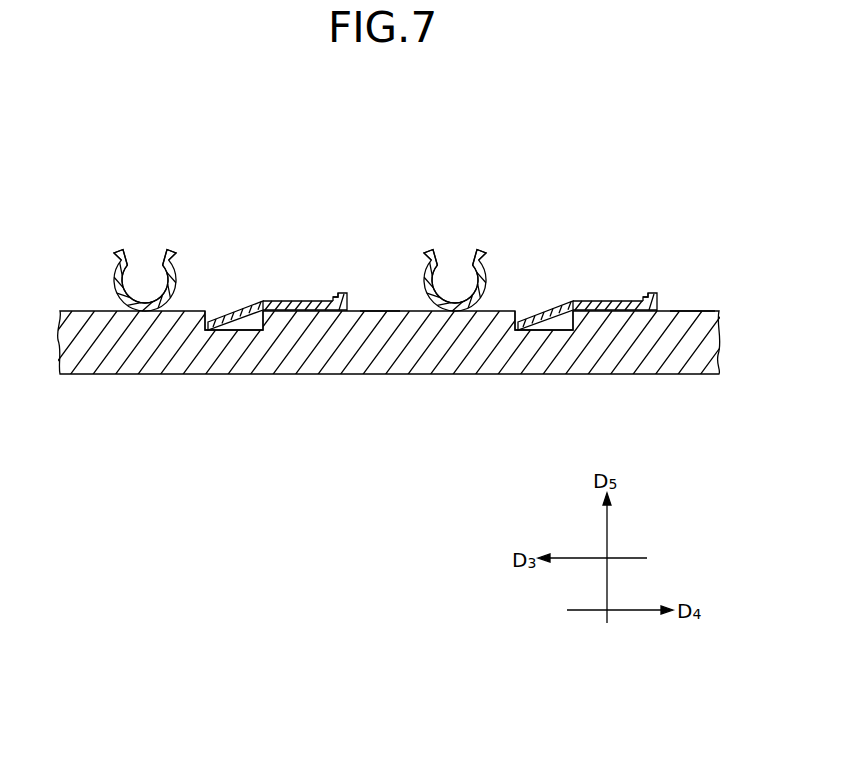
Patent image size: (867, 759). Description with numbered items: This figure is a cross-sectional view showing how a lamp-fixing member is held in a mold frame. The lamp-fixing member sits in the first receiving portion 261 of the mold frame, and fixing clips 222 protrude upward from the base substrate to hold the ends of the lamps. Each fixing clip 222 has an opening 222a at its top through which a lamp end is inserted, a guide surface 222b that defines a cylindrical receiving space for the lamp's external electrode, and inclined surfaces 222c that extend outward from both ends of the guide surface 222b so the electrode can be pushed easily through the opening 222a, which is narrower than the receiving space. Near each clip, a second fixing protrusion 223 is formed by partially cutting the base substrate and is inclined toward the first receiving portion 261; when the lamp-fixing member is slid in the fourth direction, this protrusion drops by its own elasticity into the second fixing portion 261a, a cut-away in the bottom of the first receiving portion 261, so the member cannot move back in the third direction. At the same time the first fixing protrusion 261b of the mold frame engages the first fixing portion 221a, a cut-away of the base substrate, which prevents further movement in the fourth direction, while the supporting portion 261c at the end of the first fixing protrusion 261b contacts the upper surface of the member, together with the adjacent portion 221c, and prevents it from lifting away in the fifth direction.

The first fixing portion 221a is at (382, 305).
The engaging notch 221c is at (328, 298).
The fixing clip 222 is at (228, 197).
The opening 222a is at (152, 259).
The guide surface 222b is at (178, 272).
The inclined surface 222c is at (117, 252).
The second fixing protrusion 223 is at (250, 322).
The first receiving portion 261 is at (405, 355).
The second fixing portion 261a is at (255, 326).
The first fixing protrusion 261b is at (347, 312).
The supporting portion 261c is at (343, 293).